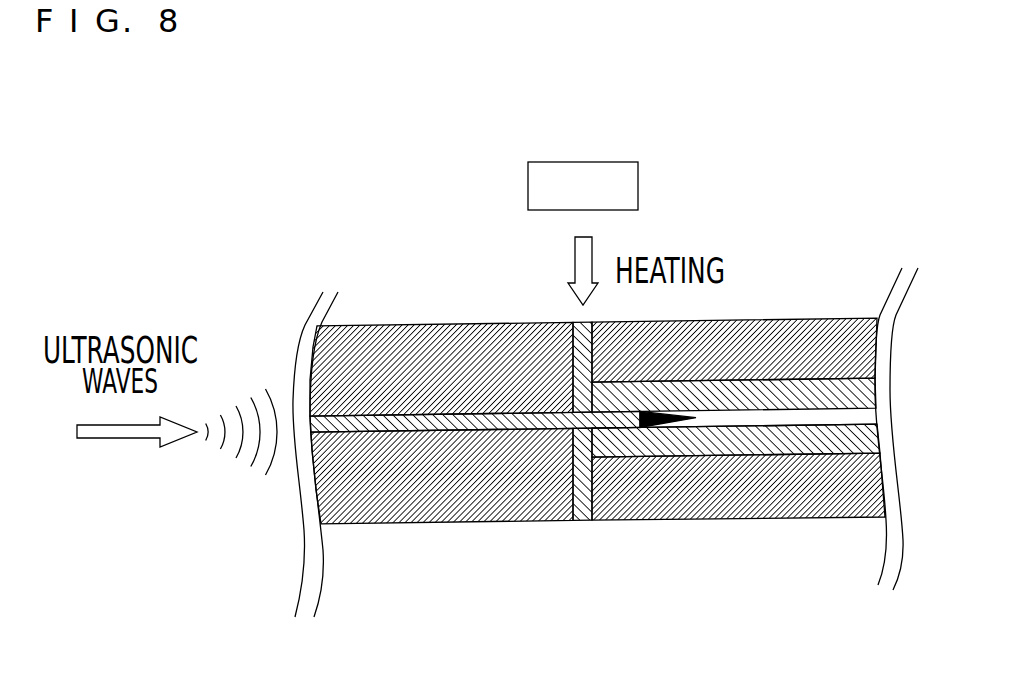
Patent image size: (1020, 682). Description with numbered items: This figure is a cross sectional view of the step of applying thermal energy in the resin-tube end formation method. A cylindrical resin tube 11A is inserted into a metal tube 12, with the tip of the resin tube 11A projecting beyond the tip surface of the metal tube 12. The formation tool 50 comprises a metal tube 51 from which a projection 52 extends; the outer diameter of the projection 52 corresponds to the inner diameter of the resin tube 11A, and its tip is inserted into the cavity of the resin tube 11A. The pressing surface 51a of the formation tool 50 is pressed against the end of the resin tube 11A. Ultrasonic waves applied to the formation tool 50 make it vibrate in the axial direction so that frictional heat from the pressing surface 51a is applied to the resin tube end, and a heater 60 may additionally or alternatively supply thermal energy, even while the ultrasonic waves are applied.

The formation tool 50 is at (597, 419).
The metal tube 51 is at (455, 512).
The pressing surface 51a is at (595, 478).
The projection 52 is at (643, 430).
The resin tube 11A is at (787, 450).
The metal tube 12 is at (869, 508).
The heater 60 is at (583, 162).